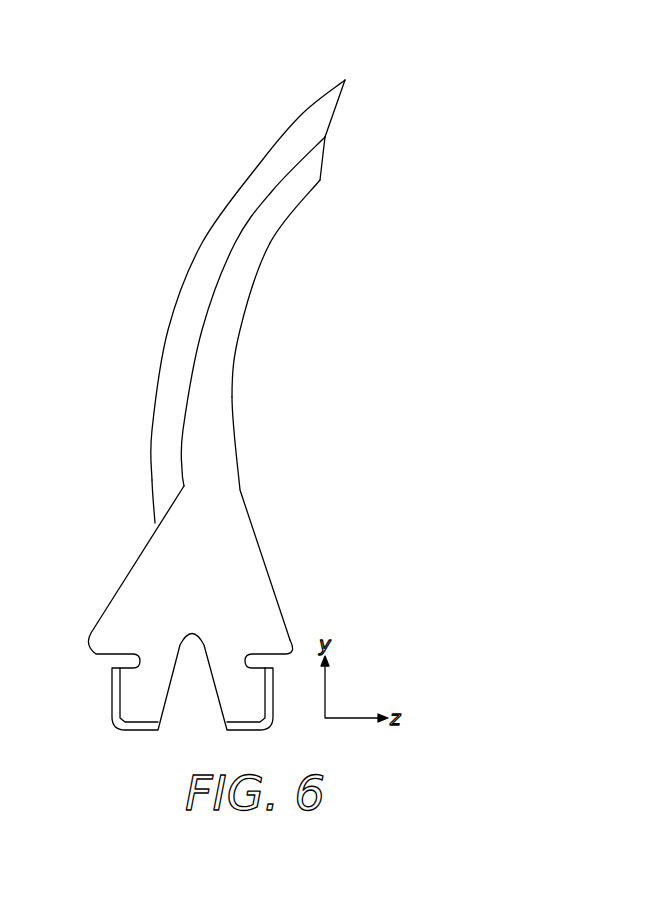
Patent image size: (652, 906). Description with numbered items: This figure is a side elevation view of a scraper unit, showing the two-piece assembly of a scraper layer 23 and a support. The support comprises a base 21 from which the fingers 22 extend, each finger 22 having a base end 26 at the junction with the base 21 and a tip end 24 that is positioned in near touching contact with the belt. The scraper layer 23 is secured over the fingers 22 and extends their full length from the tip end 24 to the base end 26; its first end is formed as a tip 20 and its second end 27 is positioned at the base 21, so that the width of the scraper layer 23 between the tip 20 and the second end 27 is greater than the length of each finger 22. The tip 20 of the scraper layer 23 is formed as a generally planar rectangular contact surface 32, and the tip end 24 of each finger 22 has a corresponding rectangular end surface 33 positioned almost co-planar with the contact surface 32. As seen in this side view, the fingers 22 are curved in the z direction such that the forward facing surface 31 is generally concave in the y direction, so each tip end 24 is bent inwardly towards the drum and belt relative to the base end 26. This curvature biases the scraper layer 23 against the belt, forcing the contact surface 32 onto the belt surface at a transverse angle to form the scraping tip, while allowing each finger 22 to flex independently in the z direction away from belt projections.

The tip 20 is at (246, 387).
The base 21 is at (258, 568).
The finger 22 is at (252, 262).
The scraper layer 23 is at (210, 248).
The tip end 24 is at (320, 180).
The base end 26 is at (220, 468).
The second end 27 is at (172, 505).
The forward facing surface 31 is at (240, 347).
The contact surface 32 is at (335, 110).
The end surface 33 is at (323, 157).